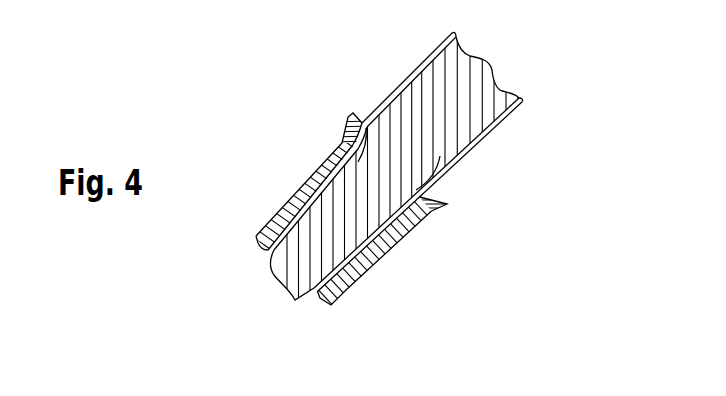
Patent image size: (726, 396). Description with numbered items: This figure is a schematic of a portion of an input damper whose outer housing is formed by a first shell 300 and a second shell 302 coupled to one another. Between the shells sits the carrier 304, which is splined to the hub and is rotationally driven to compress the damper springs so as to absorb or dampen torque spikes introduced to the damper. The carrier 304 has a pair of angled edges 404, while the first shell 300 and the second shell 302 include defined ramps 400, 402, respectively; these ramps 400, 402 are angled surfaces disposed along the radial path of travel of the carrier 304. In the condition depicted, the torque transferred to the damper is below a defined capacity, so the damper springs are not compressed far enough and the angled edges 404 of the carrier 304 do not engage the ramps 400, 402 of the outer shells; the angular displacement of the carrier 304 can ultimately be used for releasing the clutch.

The first shell 300 is at (305, 192).
The second shell 302 is at (380, 260).
The carrier 304 is at (290, 270).
The ramp 400 is at (345, 132).
The ramp 402 is at (432, 218).
The angled edges 404 is at (381, 149).